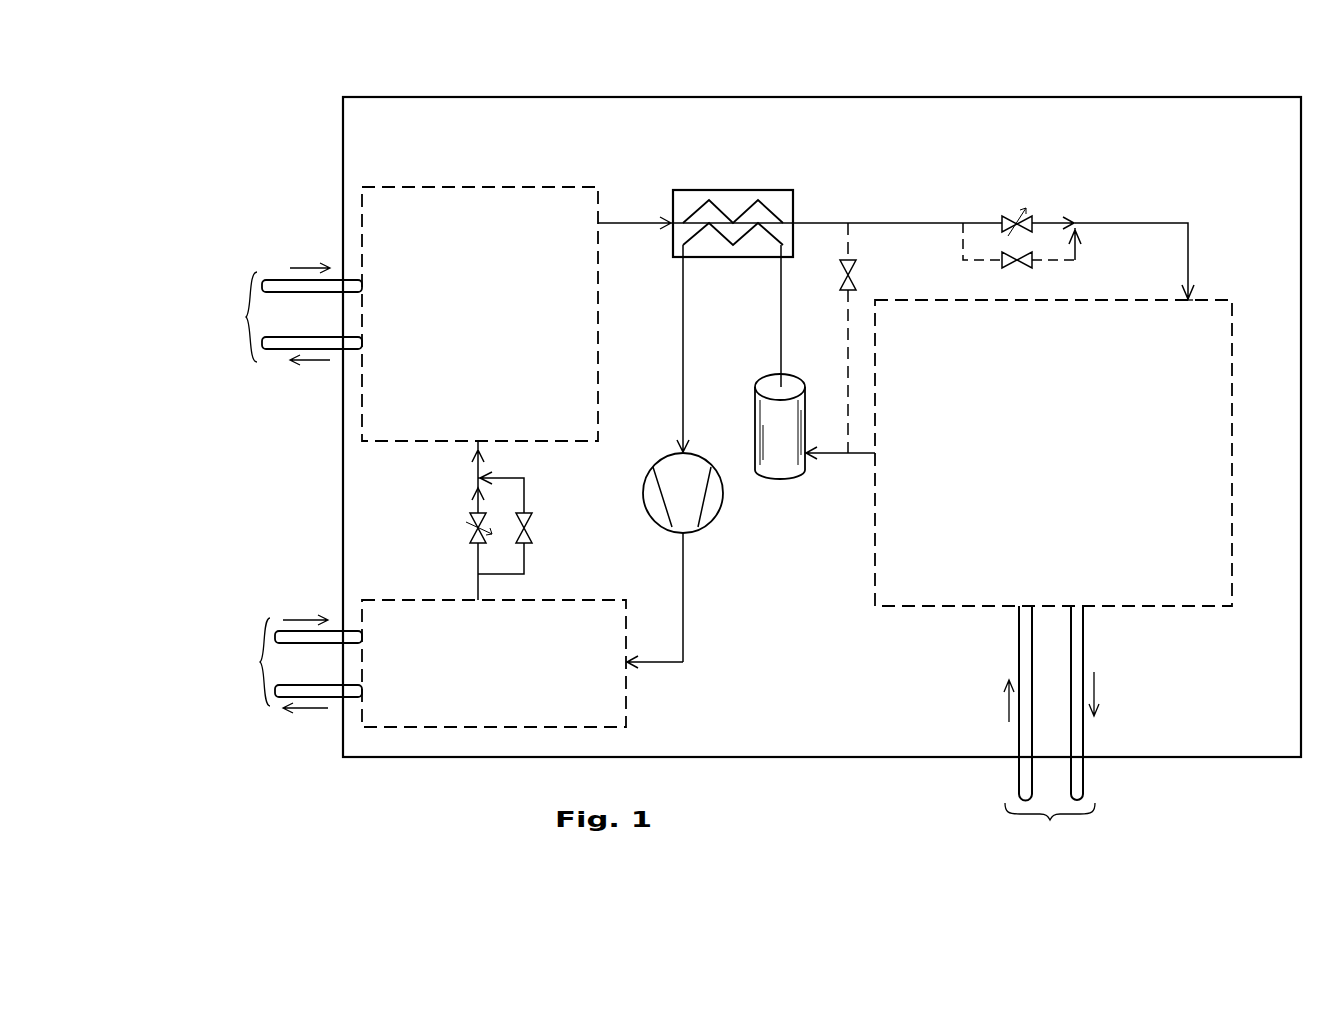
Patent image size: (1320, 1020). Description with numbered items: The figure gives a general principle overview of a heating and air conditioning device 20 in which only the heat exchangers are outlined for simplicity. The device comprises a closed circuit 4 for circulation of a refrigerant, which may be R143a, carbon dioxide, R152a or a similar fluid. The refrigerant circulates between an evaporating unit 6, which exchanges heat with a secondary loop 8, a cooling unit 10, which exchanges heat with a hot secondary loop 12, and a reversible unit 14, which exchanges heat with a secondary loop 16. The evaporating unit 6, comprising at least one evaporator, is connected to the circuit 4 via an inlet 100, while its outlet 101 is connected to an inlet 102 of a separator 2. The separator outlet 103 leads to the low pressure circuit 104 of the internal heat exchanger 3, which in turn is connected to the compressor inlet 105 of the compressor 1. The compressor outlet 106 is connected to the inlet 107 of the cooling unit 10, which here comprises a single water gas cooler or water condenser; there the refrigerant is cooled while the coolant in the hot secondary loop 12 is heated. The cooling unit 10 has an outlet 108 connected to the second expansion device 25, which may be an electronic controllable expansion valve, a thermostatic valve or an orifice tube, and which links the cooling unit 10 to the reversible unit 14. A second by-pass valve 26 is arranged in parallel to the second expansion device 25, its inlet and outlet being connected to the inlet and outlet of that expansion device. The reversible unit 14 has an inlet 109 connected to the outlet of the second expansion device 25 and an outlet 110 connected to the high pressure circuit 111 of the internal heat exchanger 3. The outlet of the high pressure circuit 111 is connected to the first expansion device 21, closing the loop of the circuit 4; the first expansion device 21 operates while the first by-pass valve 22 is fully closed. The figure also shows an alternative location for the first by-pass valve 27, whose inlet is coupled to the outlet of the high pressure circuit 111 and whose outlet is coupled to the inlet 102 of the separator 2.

The compressor 1 is at (720, 508).
The separator 2 is at (765, 450).
The internal heat exchanger 3 is at (780, 190).
The circuit 4 is at (1123, 223).
The evaporating unit 6 is at (1053, 453).
The secondary loop 8 is at (1051, 729).
The cooling unit 10 is at (630, 692).
The secondary loop 12 is at (295, 664).
The reversible unit 14 is at (530, 187).
The secondary loop 16 is at (286, 314).
The heating and air conditioning device 20 is at (822, 427).
The first expansion device 21 is at (1005, 217).
The first by-pass valve 22 is at (1028, 272).
The second expansion device 25 is at (470, 535).
The second by-pass valve 26 is at (535, 542).
The first by-pass valve 27 is at (853, 268).
The inlet 100 is at (1190, 298).
The outlet 101 is at (873, 460).
The inlet 102 is at (790, 458).
The separator outlet 103 is at (785, 384).
The low pressure circuit 104 is at (712, 258).
The compressor inlet 105 is at (672, 465).
The compressor outlet 106 is at (688, 535).
The inlet 107 is at (628, 662).
The outlet 108 is at (478, 600).
The inlet 109 is at (480, 445).
The outlet 110 is at (600, 222).
The high pressure circuit 111 is at (693, 190).